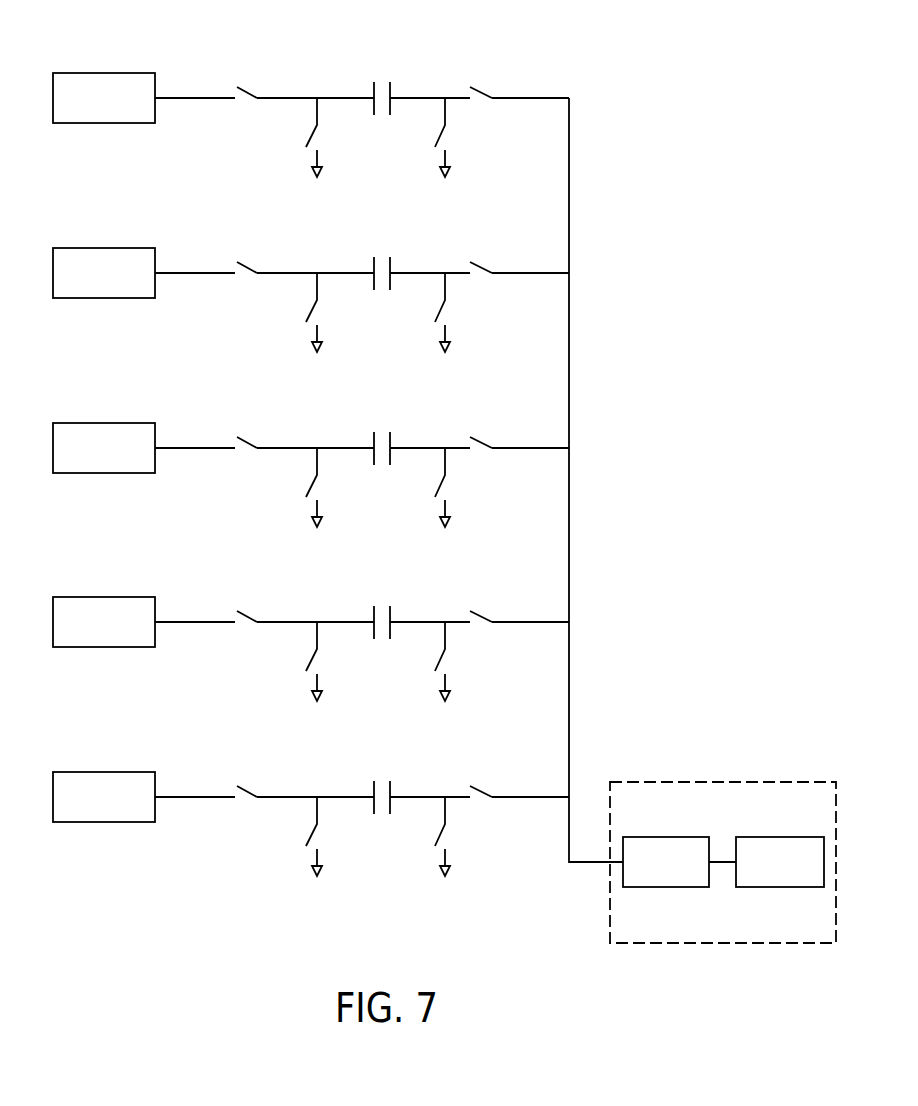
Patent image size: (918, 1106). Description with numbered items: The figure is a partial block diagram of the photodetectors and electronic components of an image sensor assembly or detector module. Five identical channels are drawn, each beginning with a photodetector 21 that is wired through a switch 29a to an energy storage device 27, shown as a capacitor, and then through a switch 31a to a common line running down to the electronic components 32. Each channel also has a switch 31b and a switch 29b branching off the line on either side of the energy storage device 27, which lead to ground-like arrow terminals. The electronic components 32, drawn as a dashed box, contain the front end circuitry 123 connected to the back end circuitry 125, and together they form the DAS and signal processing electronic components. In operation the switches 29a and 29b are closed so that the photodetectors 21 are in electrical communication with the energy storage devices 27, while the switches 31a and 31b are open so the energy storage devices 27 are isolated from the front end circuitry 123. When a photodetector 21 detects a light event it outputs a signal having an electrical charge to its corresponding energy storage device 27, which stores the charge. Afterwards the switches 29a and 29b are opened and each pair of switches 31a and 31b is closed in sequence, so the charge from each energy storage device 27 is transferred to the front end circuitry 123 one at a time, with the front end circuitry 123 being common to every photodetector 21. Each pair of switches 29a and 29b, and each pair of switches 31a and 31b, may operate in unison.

The photodetector 21 is at (120, 110).
The energy storage device 27 is at (396, 76).
The switch 29a is at (258, 84).
The switch 29b is at (462, 138).
The switch 31a is at (495, 83).
The switch 31b is at (288, 138).
The electronic components 32 is at (787, 782).
The front end circuitry 123 is at (688, 874).
The back end circuitry 125 is at (759, 874).